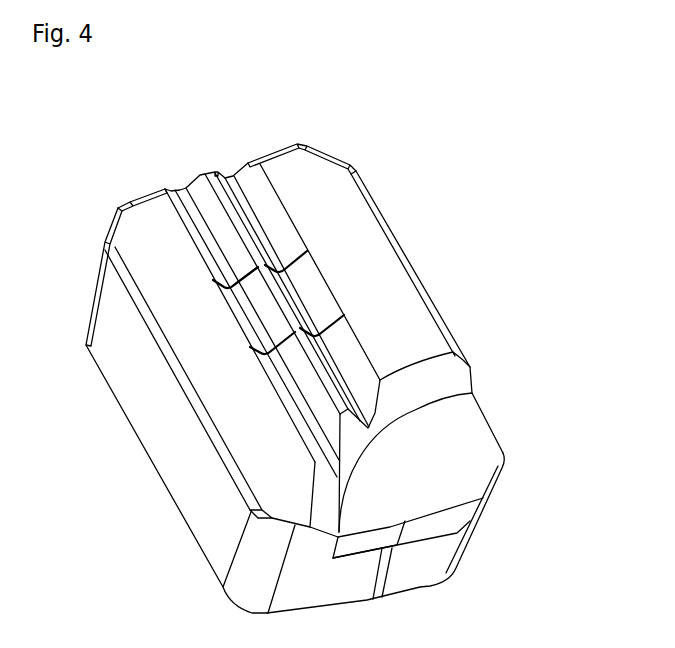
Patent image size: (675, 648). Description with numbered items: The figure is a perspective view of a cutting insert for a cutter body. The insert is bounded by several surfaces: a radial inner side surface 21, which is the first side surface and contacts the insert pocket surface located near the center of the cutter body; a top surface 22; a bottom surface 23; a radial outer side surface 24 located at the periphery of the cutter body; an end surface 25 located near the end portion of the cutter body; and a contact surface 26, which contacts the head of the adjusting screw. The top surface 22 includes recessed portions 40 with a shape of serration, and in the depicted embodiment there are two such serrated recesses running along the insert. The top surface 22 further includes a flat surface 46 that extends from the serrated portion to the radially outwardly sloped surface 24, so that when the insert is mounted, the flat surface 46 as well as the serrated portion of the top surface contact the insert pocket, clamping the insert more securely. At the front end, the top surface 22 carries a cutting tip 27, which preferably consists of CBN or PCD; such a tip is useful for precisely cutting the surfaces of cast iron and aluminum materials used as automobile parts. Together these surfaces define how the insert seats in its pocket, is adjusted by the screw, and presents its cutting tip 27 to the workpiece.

The radial inner side surface 21 is at (140, 411).
The top surface 22 is at (395, 302).
The bottom surface 23 is at (160, 491).
The radial outer side surface 24 is at (480, 374).
The end surface 25 is at (444, 557).
The contact surface 26 is at (137, 189).
The cutting tip 27 is at (480, 473).
The recessed portion 40 is at (201, 146).
The flat surface 46 is at (330, 205).